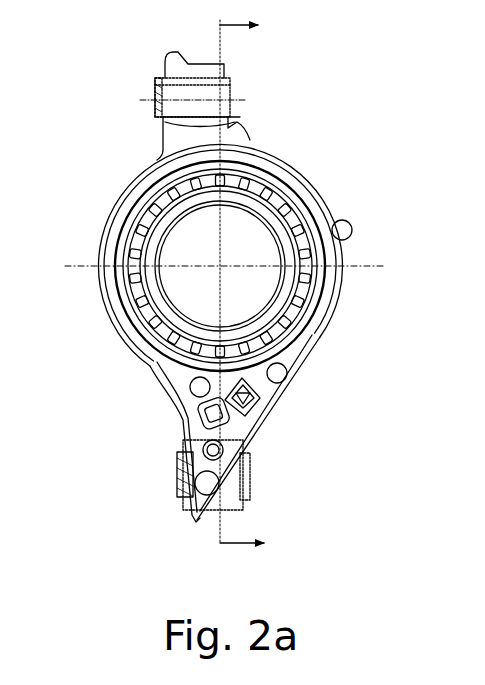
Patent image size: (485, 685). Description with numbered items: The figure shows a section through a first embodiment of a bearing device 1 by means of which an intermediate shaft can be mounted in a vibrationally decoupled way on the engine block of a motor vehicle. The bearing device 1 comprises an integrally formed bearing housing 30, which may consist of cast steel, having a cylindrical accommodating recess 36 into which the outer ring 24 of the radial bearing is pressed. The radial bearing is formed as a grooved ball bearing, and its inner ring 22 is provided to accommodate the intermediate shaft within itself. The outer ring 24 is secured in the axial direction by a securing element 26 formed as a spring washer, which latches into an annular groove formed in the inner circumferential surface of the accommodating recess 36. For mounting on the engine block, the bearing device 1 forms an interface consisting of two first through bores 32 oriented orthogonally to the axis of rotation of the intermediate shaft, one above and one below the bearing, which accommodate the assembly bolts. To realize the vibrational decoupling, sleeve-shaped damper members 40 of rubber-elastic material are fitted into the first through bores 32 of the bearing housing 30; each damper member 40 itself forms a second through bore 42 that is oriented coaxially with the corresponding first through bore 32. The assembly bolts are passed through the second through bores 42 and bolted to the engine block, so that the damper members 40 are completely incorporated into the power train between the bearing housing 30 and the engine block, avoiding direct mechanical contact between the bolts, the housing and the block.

The bearing device 1 is at (382, 124).
The inner ring 22 is at (283, 237).
The outer ring 24 is at (313, 258).
The securing element 26 is at (293, 330).
The bearing housing 30 is at (320, 295).
The first through bores 32 is at (206, 84).
The accommodating recess 36 is at (113, 225).
The damper members 40 is at (240, 118).
The second through bore 42 is at (165, 91).